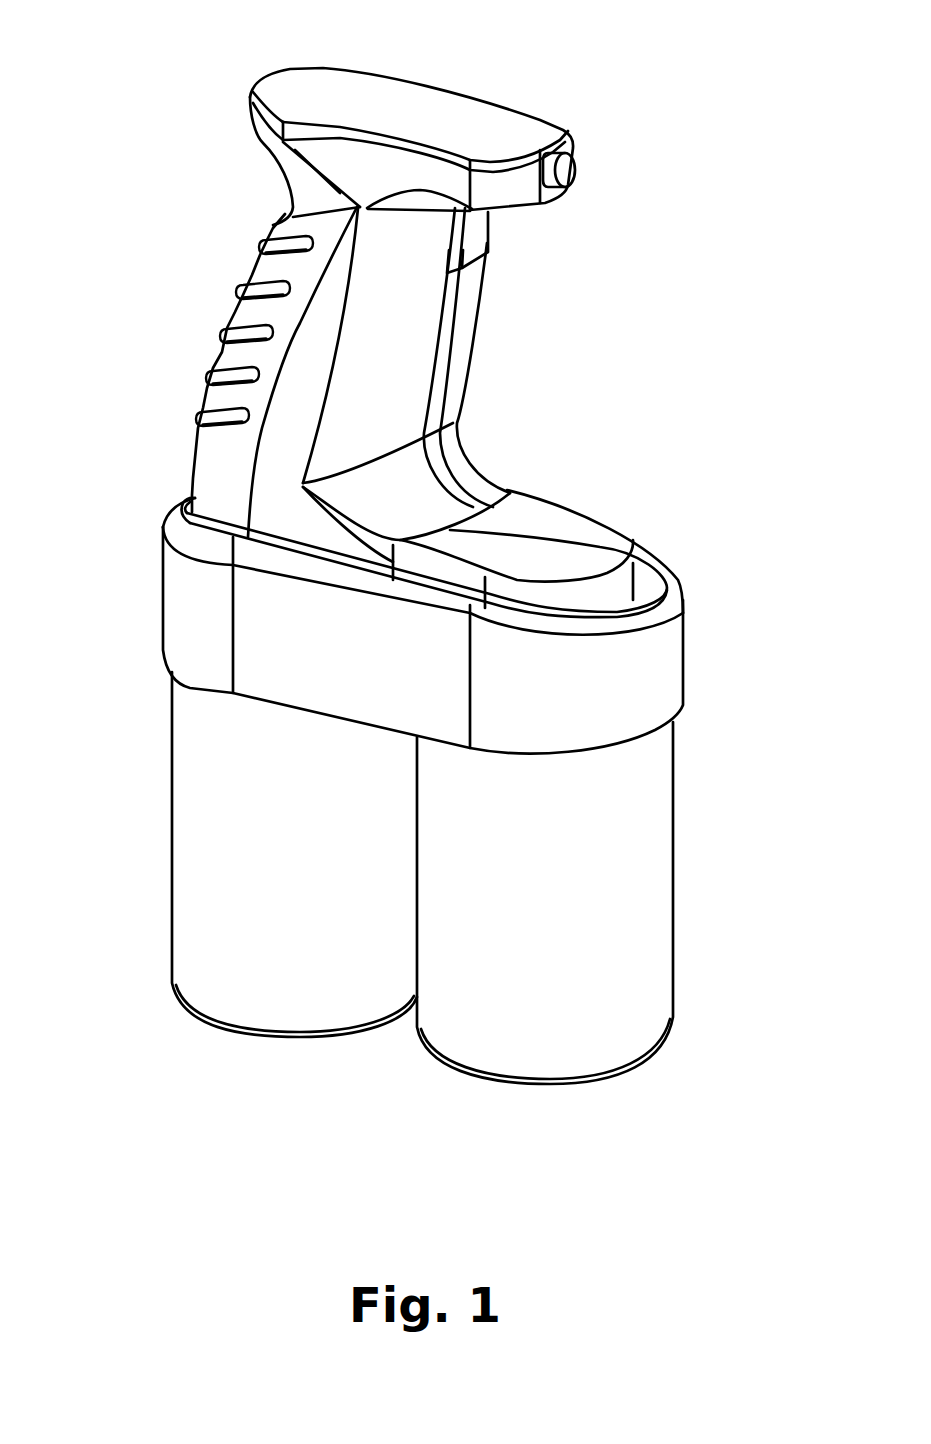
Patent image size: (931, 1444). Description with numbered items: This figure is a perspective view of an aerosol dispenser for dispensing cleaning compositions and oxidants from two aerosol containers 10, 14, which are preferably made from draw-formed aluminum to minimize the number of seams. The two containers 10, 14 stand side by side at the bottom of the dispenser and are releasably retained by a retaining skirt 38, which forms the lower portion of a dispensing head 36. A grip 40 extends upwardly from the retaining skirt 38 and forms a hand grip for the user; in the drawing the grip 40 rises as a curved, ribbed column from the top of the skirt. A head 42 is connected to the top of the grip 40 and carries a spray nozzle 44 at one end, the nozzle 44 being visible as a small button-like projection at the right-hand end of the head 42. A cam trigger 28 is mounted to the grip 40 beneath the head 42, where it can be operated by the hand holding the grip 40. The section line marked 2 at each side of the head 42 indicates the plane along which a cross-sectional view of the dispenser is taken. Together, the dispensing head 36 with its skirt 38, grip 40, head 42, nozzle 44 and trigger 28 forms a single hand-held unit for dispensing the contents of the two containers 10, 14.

The aerosol container 10 is at (660, 850).
The aerosol container 14 is at (180, 742).
The cam trigger 28 is at (480, 240).
The dispensing head 36 is at (483, 465).
The retaining skirt 38 is at (633, 665).
The grip 40 is at (403, 374).
The head 42 is at (443, 105).
The spray nozzle 44 is at (573, 166).
The section line 2- 2 is at (237, 91).